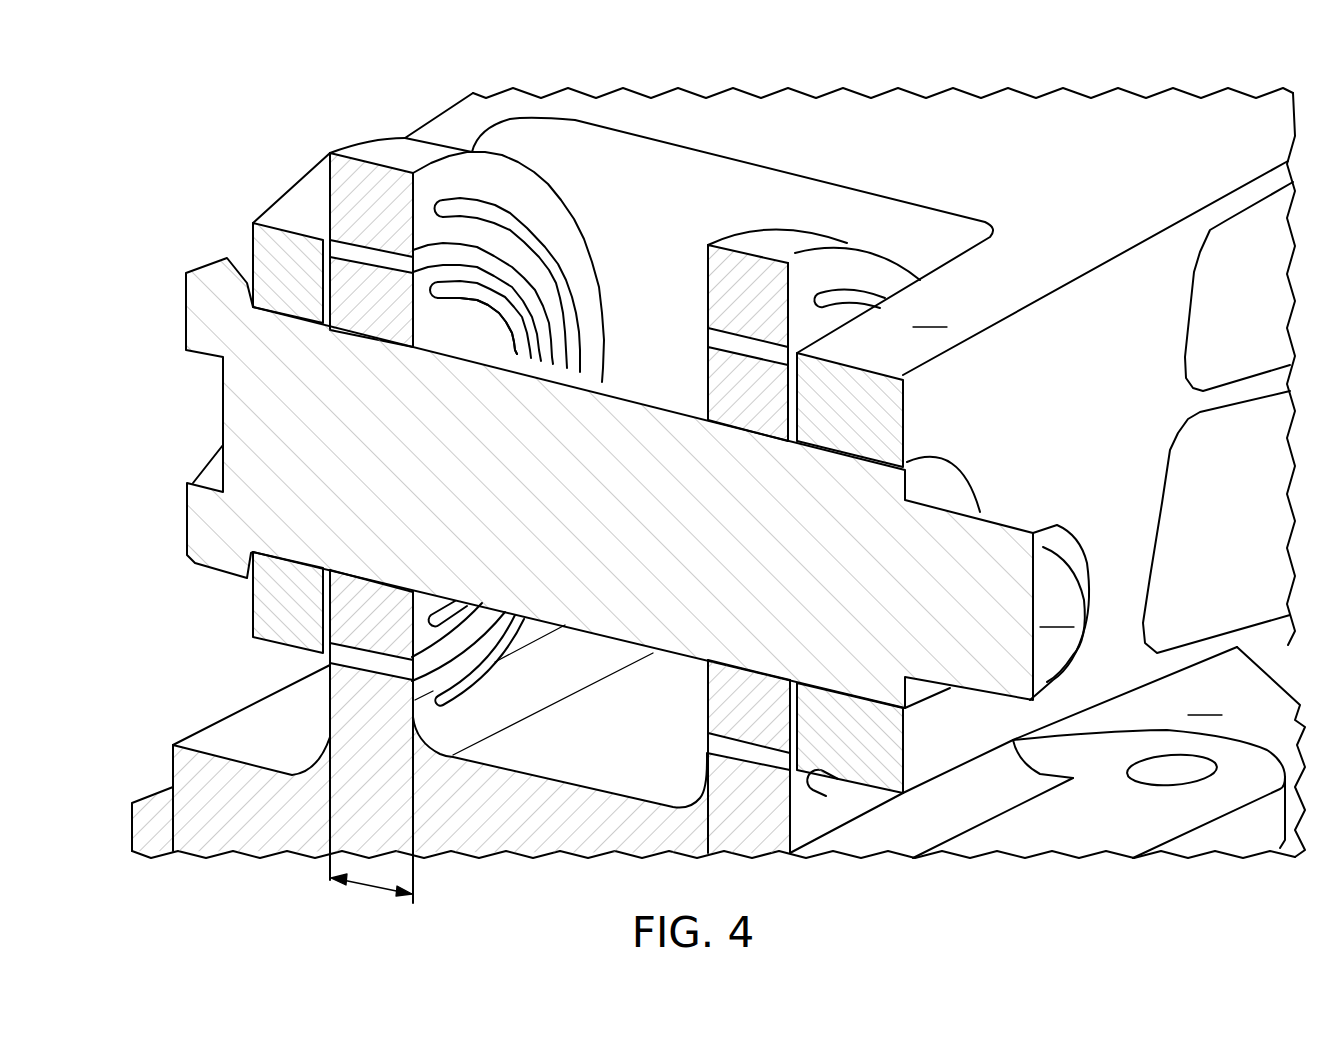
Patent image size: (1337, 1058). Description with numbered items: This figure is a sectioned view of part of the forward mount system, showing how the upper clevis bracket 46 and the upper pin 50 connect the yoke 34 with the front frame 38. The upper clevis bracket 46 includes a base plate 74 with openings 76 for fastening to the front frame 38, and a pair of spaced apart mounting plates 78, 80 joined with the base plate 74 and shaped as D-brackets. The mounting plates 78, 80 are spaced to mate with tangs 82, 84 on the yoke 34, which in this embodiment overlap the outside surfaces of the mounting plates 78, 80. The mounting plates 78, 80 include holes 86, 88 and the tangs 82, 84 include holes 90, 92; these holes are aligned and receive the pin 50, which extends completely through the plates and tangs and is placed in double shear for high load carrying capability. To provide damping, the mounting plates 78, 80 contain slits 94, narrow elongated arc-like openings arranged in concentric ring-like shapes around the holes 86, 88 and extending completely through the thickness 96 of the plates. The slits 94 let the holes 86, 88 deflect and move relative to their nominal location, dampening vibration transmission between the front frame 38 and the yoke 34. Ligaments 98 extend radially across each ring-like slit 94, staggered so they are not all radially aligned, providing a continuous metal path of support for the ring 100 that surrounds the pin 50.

The yoke 34 is at (873, 174).
The front frame 38 is at (1104, 752).
The upper clevis bracket 46 is at (381, 155).
The upper pin 50 is at (637, 483).
The base plate 74 is at (1160, 830).
The openings 76 is at (1160, 777).
The mounting plate 78 is at (568, 232).
The mounting plate 80 is at (863, 264).
The tang 82 is at (285, 218).
The tang 84 is at (827, 348).
The hole 86 is at (360, 340).
The hole 88 is at (725, 658).
The hole 90 is at (266, 550).
The hole 92 is at (893, 703).
The slits 94 is at (530, 298).
The thickness 96 is at (373, 890).
The ligaments 98 is at (420, 213).
The ring 100 is at (453, 327).